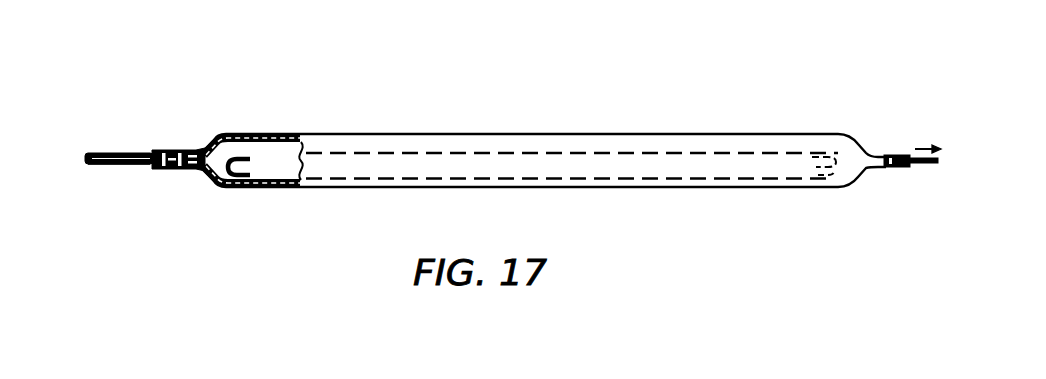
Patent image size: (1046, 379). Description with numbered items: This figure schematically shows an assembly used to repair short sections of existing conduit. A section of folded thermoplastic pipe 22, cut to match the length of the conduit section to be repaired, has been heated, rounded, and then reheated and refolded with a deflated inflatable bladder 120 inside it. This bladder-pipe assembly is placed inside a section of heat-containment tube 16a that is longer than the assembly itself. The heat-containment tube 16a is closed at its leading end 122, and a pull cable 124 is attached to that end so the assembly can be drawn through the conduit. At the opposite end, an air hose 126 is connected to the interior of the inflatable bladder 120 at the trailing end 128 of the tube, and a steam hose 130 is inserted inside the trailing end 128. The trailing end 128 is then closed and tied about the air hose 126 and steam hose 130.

The folded thermoplastic pipe 22 is at (453, 152).
The heat-containment tube 16a is at (253, 137).
The inflatable bladder 120 is at (248, 157).
The leading end 122 is at (867, 152).
The pull cable 124 is at (928, 168).
The air hose 126 is at (128, 152).
The trailing end 128 is at (205, 146).
The steam hose 130 is at (123, 166).